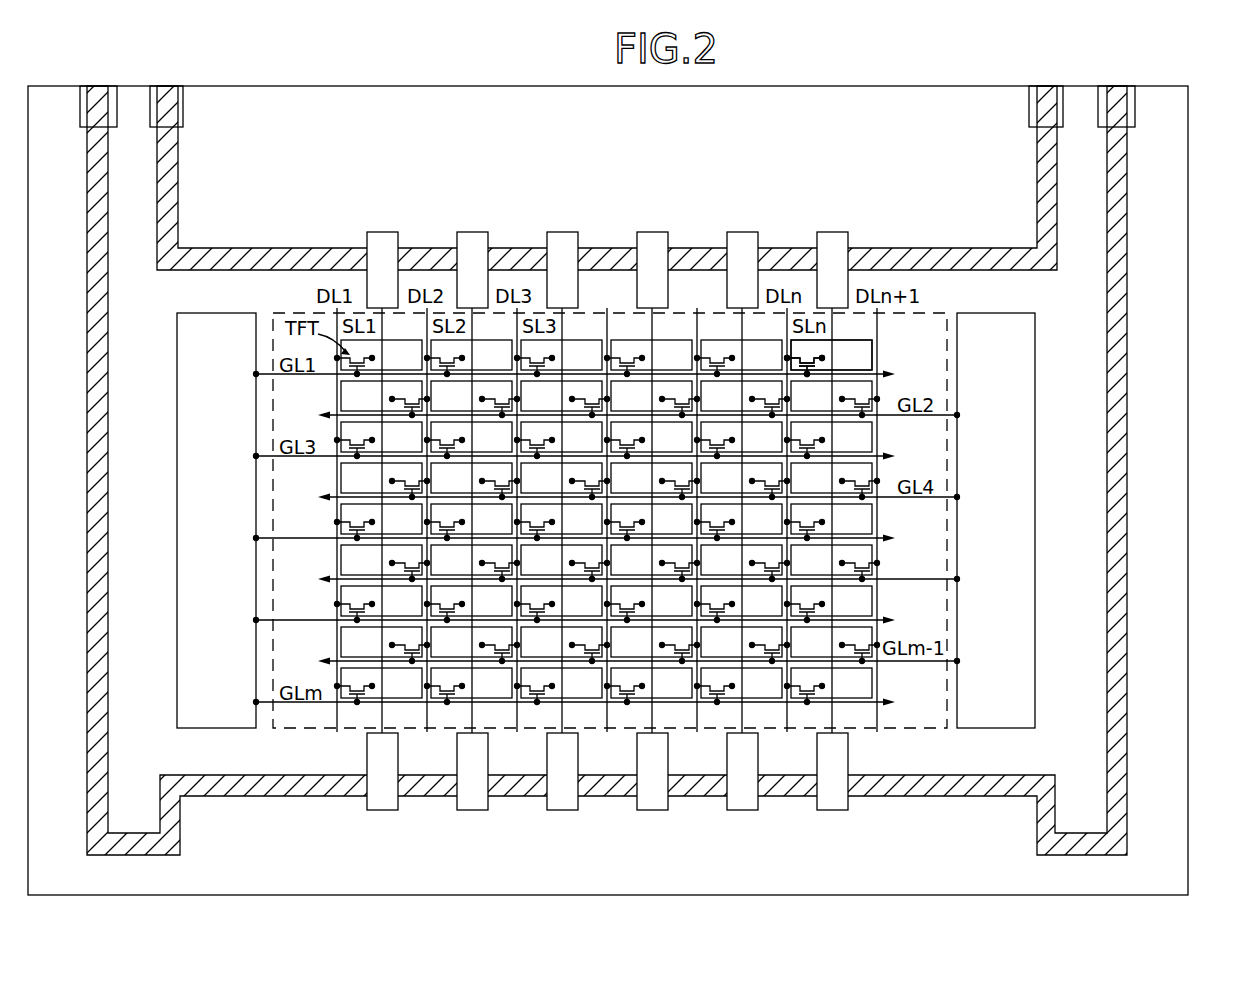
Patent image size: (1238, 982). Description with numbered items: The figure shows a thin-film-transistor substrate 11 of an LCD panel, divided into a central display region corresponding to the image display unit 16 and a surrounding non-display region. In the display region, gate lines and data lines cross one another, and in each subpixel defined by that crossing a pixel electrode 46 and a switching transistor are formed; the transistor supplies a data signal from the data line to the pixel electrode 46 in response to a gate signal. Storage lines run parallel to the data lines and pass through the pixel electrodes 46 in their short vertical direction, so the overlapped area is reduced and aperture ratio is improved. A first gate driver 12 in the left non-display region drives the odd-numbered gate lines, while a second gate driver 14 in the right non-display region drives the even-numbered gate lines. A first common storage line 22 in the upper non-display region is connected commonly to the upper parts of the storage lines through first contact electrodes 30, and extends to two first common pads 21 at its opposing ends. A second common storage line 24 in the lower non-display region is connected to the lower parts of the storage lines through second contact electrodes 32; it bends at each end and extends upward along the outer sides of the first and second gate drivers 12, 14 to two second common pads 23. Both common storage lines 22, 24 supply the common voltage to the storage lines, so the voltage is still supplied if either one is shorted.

The TFT substrate 11 is at (1188, 376).
The first gate driver 12 is at (177, 526).
The second gate driver 14 is at (1035, 520).
The image display unit 16 is at (918, 729).
The first common pads 21 is at (183, 108).
The first common storage line 22 is at (178, 204).
The second common pads 23 is at (80, 108).
The second common storage line 24 is at (97, 213).
The first contact electrodes 30 is at (380, 232).
The second contact electrodes 32 is at (384, 811).
The pixel electrode 46 is at (872, 350).